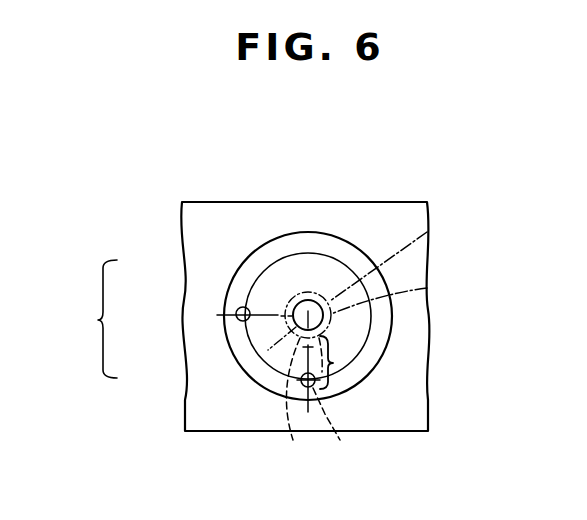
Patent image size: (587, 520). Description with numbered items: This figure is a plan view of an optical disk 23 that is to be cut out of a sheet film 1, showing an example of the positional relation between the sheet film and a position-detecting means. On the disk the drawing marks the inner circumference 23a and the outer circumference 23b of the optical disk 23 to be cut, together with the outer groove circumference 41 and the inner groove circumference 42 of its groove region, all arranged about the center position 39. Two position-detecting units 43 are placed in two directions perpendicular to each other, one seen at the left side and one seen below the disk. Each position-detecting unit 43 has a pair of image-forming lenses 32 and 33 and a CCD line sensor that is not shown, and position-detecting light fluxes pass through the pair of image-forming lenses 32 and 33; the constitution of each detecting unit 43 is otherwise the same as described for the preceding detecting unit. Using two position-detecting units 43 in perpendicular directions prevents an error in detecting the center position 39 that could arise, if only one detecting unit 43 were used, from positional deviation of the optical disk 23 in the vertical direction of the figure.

The mounting plate 1 is at (200, 218).
The optical disk 23 is at (257, 383).
The inner circumference 23a is at (313, 300).
The outer circumference 23b is at (273, 235).
The center position 39 is at (321, 303).
The outer groove circumference 41 is at (427, 232).
The inner groove circumference 42 is at (427, 288).
The position-detecting unit 43 is at (333, 363).
The image-forming lens 32 is at (237, 309).
The image-forming lens 33 is at (287, 320).